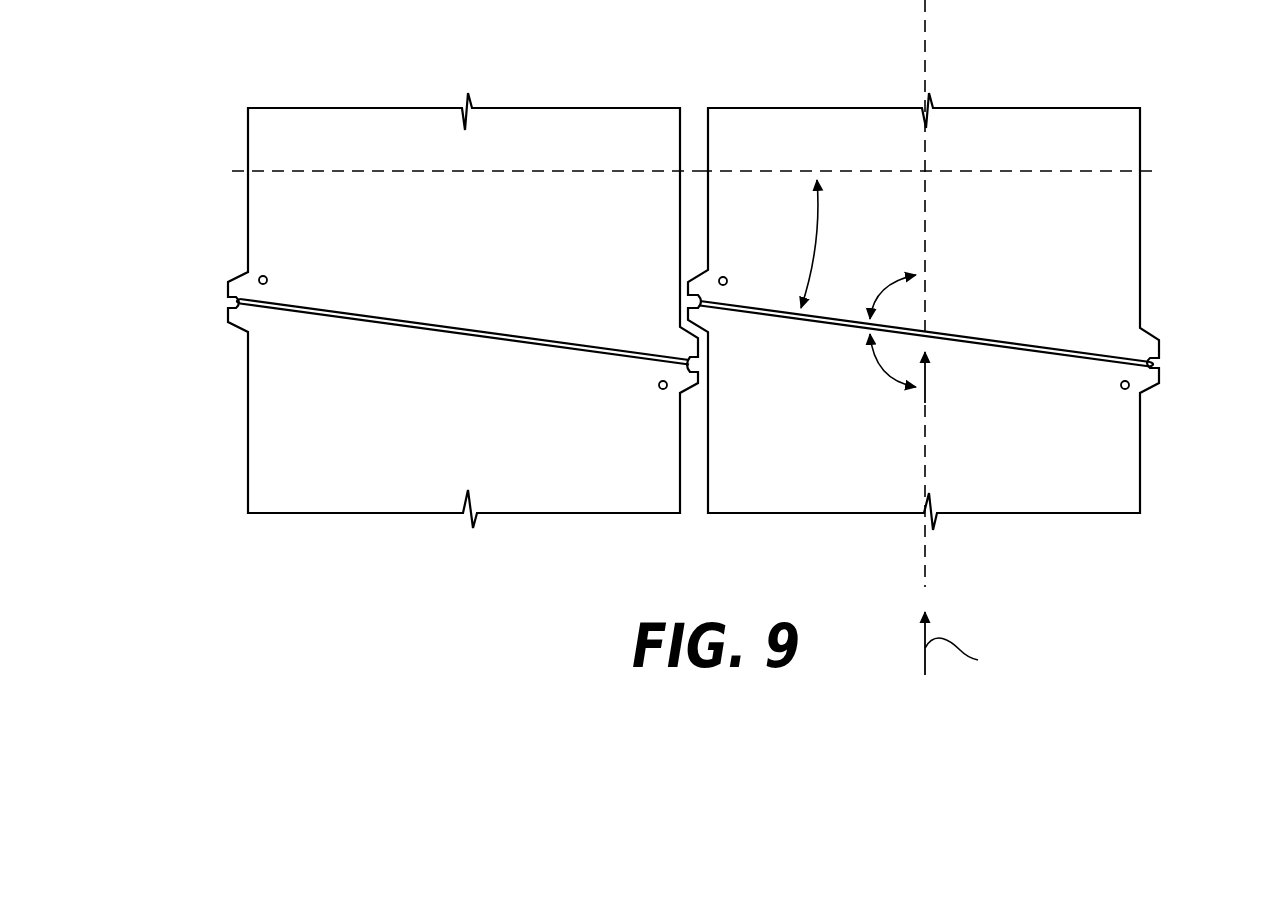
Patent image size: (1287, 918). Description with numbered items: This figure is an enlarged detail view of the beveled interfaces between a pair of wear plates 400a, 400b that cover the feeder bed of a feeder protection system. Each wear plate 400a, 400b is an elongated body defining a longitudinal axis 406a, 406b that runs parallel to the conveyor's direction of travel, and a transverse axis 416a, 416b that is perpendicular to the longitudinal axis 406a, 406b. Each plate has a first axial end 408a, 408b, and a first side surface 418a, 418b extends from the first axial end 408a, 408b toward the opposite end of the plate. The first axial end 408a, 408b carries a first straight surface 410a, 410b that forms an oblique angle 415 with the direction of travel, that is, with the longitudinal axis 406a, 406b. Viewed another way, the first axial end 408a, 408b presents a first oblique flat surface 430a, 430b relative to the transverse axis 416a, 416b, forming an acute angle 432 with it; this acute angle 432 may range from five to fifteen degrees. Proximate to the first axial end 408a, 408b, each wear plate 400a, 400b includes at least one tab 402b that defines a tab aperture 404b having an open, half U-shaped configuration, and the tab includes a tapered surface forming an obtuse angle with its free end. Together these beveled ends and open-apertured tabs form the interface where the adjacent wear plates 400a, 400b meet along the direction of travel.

The wear plate 400a is at (621, 150).
The wear plate 400b is at (369, 484).
The tab 402b is at (235, 266).
The tab aperture 404b is at (236, 302).
The longitudinal axis 406a is at (925, 560).
The longitudinal axis 406b is at (925, 5).
The first axial end 408a is at (455, 325).
The first axial end 408b is at (485, 345).
The first straight surface 410a is at (340, 300).
The first straight surface 410b is at (380, 330).
The oblique angle 415 is at (910, 270).
The transverse axis 416a is at (312, 175).
The transverse axis 416b is at (1073, 172).
The first side surface 418a is at (248, 136).
The first side surface 418b is at (248, 462).
The first oblique flat surface 430a is at (985, 348).
The first oblique flat surface 430b is at (1010, 345).
The acute angle 432 is at (817, 240).